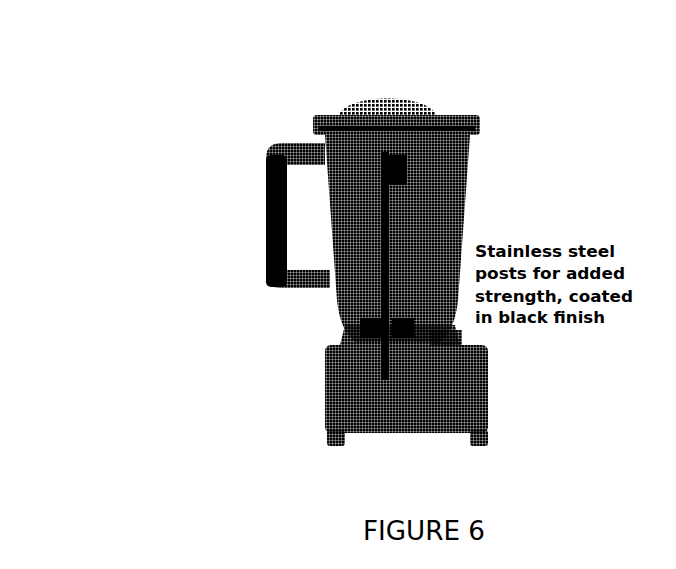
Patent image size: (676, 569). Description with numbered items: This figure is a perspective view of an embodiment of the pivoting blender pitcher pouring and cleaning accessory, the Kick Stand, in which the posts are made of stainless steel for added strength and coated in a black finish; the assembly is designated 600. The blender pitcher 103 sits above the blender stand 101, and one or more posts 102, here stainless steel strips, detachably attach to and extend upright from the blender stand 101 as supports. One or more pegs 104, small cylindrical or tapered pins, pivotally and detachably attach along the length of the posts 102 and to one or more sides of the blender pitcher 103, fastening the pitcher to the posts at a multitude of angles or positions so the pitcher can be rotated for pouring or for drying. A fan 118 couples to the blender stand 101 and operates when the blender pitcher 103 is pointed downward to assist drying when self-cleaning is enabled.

The blender 600 is at (319, 242).
The blender stand 101 is at (463, 380).
The posts 102 is at (377, 310).
The blender pitcher 103 is at (338, 180).
The pegs 104 is at (392, 220).
The fan 118 is at (442, 338).